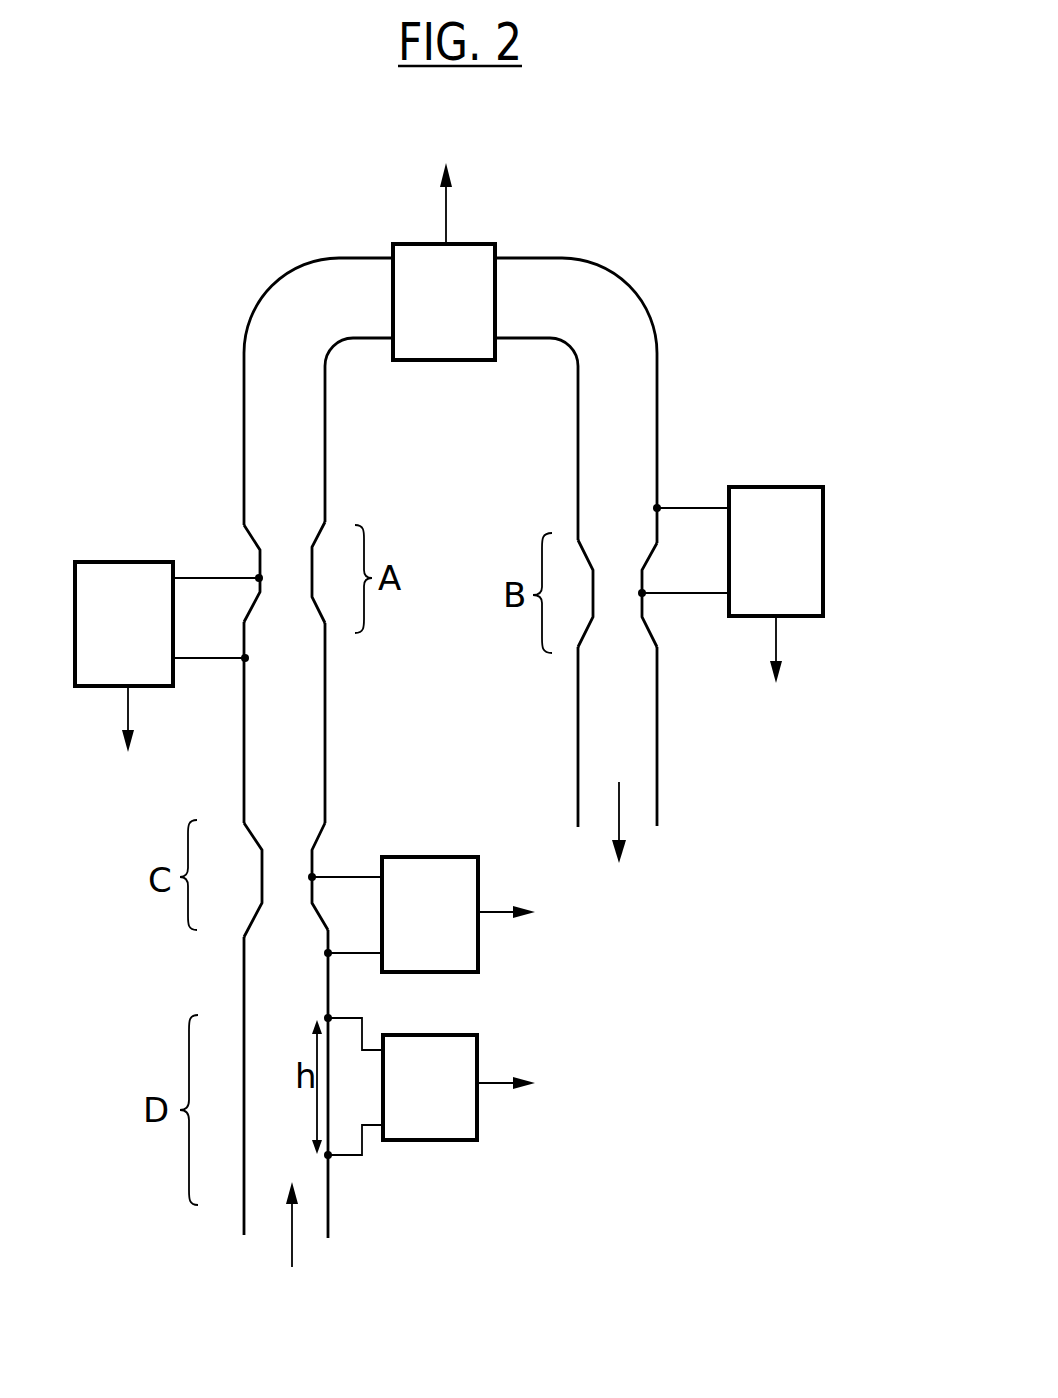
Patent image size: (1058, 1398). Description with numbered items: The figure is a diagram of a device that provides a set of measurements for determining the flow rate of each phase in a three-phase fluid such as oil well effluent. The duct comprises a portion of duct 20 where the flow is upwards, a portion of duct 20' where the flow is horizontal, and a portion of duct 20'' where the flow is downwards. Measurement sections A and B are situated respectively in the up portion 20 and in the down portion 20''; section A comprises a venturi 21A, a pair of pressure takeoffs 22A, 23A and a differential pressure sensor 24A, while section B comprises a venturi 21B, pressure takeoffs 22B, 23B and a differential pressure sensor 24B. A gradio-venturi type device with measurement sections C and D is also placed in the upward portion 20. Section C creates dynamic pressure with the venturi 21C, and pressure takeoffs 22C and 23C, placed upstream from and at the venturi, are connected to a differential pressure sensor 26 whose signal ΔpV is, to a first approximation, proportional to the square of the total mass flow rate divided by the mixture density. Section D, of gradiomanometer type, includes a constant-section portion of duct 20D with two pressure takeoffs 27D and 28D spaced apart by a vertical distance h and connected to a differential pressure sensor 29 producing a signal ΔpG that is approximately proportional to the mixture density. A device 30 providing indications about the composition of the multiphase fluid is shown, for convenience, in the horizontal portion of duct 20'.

The portion of duct 20 is at (240, 433).
The portion of duct 20' is at (450, 256).
The portion of duct 20'' is at (681, 584).
The portion of duct 20D is at (305, 1143).
The venturi 21A is at (270, 588).
The pressure takeoff 22A is at (245, 658).
The pressure takeoff 23A is at (259, 578).
The differential pressure sensor 24A is at (92, 560).
The venturi 21B is at (600, 600).
The pressure takeoff 22B is at (657, 507).
The pressure takeoff 23B is at (642, 593).
The differential pressure sensor 24B is at (825, 520).
The venturi 21C is at (273, 887).
The pressure takeoff 22C is at (348, 957).
The pressure takeoff 23C is at (347, 873).
The differential pressure sensor 26 is at (450, 855).
The pressure takeoff 27D is at (328, 1155).
The pressure takeoff 28D is at (331, 1015).
The differential pressure sensor 29 is at (435, 1123).
The device 30 is at (440, 343).